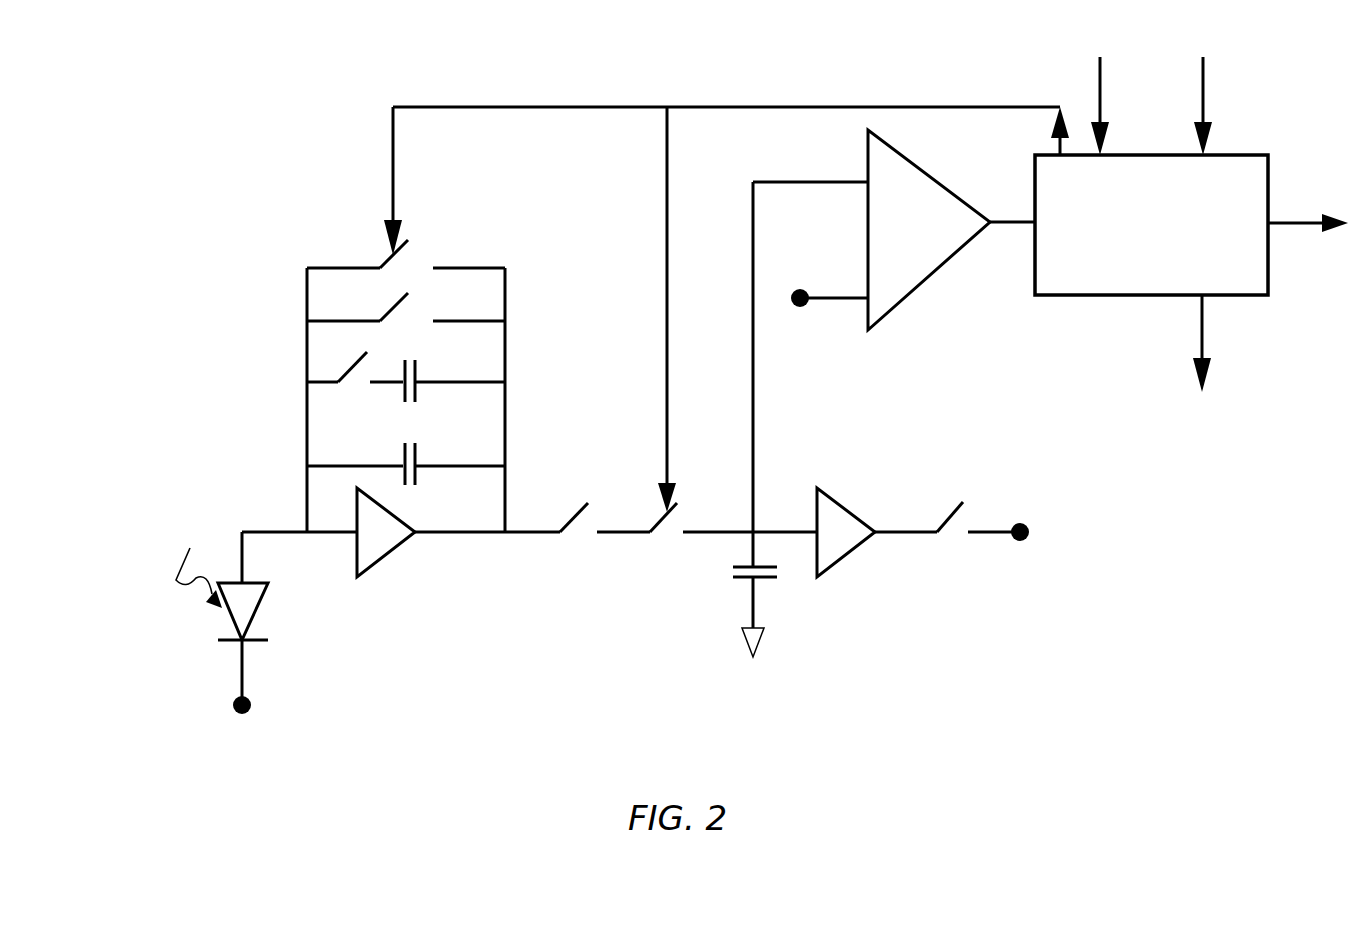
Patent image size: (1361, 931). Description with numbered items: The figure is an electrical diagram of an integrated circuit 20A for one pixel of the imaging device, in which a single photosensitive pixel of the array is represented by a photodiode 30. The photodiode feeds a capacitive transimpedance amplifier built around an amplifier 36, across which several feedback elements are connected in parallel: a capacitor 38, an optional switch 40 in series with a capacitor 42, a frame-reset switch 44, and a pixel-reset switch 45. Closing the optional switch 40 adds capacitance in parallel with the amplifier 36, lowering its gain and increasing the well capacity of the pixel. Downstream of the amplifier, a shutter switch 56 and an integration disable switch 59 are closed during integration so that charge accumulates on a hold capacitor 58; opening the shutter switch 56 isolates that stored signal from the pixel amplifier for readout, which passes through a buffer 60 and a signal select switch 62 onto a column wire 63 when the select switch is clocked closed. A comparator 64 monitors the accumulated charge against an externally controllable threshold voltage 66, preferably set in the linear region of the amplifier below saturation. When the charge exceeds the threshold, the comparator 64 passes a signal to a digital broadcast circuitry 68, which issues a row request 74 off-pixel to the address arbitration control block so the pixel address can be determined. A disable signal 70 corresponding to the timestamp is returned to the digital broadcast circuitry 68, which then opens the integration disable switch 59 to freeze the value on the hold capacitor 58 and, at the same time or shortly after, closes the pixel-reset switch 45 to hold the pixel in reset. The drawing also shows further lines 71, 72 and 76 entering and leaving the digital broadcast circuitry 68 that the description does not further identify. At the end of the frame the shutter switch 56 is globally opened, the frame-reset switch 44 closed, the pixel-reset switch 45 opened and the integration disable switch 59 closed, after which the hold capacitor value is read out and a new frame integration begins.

The integrated circuit 20A is at (1012, 740).
The photodiode 30 is at (226, 643).
The amplifier 36 is at (391, 557).
The capacitor 38 is at (418, 453).
The optional switch 40 is at (348, 372).
The capacitor 42 is at (418, 363).
The frame-reset switch 44 is at (398, 307).
The pixel-reset switch 45 is at (398, 255).
The shutter switch 56 is at (575, 540).
The hold capacitor 58 is at (745, 580).
The integration disable switch 59 is at (665, 540).
The buffer 60 is at (846, 508).
The signal select switch 62 is at (942, 522).
The column wire 63 is at (1025, 545).
The comparator 64 is at (945, 263).
The threshold voltage 66 is at (800, 310).
The digital broadcast circuitry 68 is at (1061, 298).
The disable signal 70 is at (1100, 112).
The control signal arrow 71 is at (1048, 122).
The input signal 72 is at (1203, 88).
The row request 74 is at (1278, 215).
The output signal 76 is at (1200, 315).